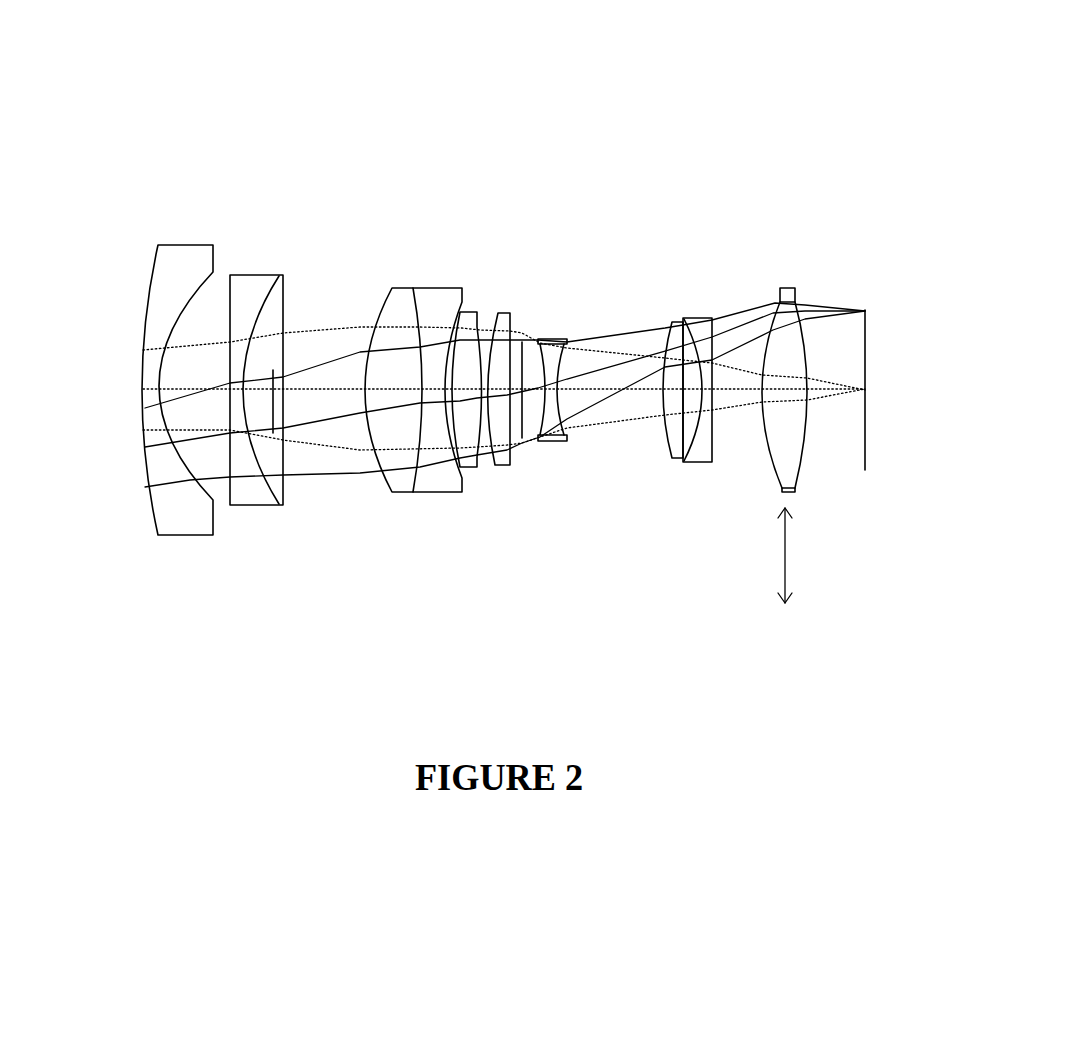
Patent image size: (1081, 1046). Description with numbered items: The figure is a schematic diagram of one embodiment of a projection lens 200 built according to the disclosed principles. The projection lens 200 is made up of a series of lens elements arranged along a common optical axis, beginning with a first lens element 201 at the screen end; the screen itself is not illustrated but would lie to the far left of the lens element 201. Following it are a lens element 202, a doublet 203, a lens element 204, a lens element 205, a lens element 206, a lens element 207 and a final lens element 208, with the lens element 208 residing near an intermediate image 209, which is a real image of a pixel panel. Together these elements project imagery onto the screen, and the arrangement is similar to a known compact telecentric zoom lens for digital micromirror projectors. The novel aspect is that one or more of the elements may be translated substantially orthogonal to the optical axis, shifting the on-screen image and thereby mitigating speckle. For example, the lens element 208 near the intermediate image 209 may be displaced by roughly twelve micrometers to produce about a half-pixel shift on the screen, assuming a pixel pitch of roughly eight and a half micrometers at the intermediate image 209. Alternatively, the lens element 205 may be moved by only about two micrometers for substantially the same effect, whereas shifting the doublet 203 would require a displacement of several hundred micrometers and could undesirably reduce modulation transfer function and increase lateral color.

The projection lens 200 is at (933, 212).
The lens element 201 is at (160, 275).
The lens element 202 is at (306, 252).
The doublet 203 is at (400, 313).
The lens element 204 is at (466, 470).
The lens element 205 is at (513, 467).
The lens element 206 is at (550, 337).
The lens element 207 is at (700, 318).
The lens element 208 is at (790, 352).
The intermediate image 209 is at (863, 373).